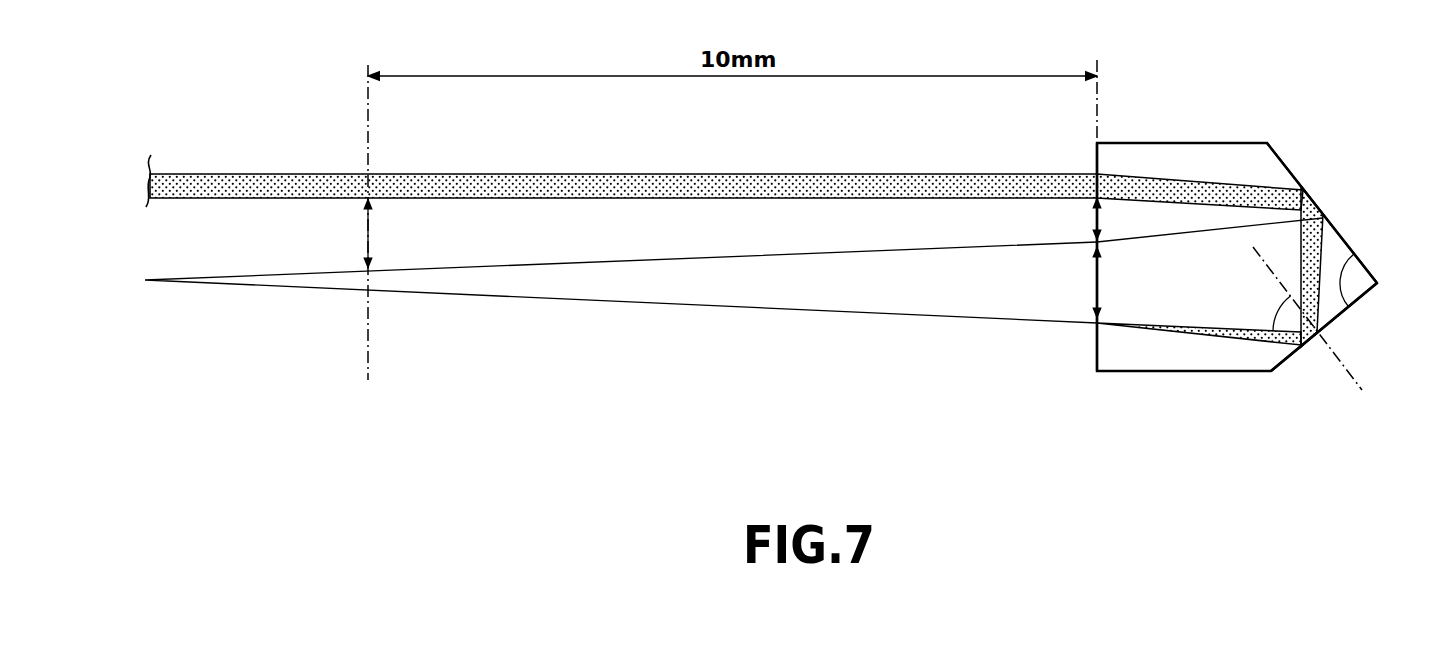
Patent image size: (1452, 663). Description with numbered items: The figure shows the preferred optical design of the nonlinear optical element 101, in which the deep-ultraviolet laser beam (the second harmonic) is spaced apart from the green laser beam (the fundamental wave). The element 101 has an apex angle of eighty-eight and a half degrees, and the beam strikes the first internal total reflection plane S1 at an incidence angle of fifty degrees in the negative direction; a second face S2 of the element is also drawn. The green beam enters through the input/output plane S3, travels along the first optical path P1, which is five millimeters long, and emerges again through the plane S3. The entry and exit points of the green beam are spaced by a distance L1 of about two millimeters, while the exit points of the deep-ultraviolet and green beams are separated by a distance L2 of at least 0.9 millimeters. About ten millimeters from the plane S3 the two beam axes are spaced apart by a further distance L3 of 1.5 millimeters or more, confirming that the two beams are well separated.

The nonlinear optical element 101 is at (1176, 147).
The first internal total reflection plane S1 is at (1272, 371).
The second surface of prism S2 is at (1293, 175).
The input/output plane S3 is at (1097, 352).
The first optical path P1 is at (1190, 333).
The distance L1 is at (1074, 282).
The distance L2 is at (1074, 219).
The distance L3 is at (390, 233).